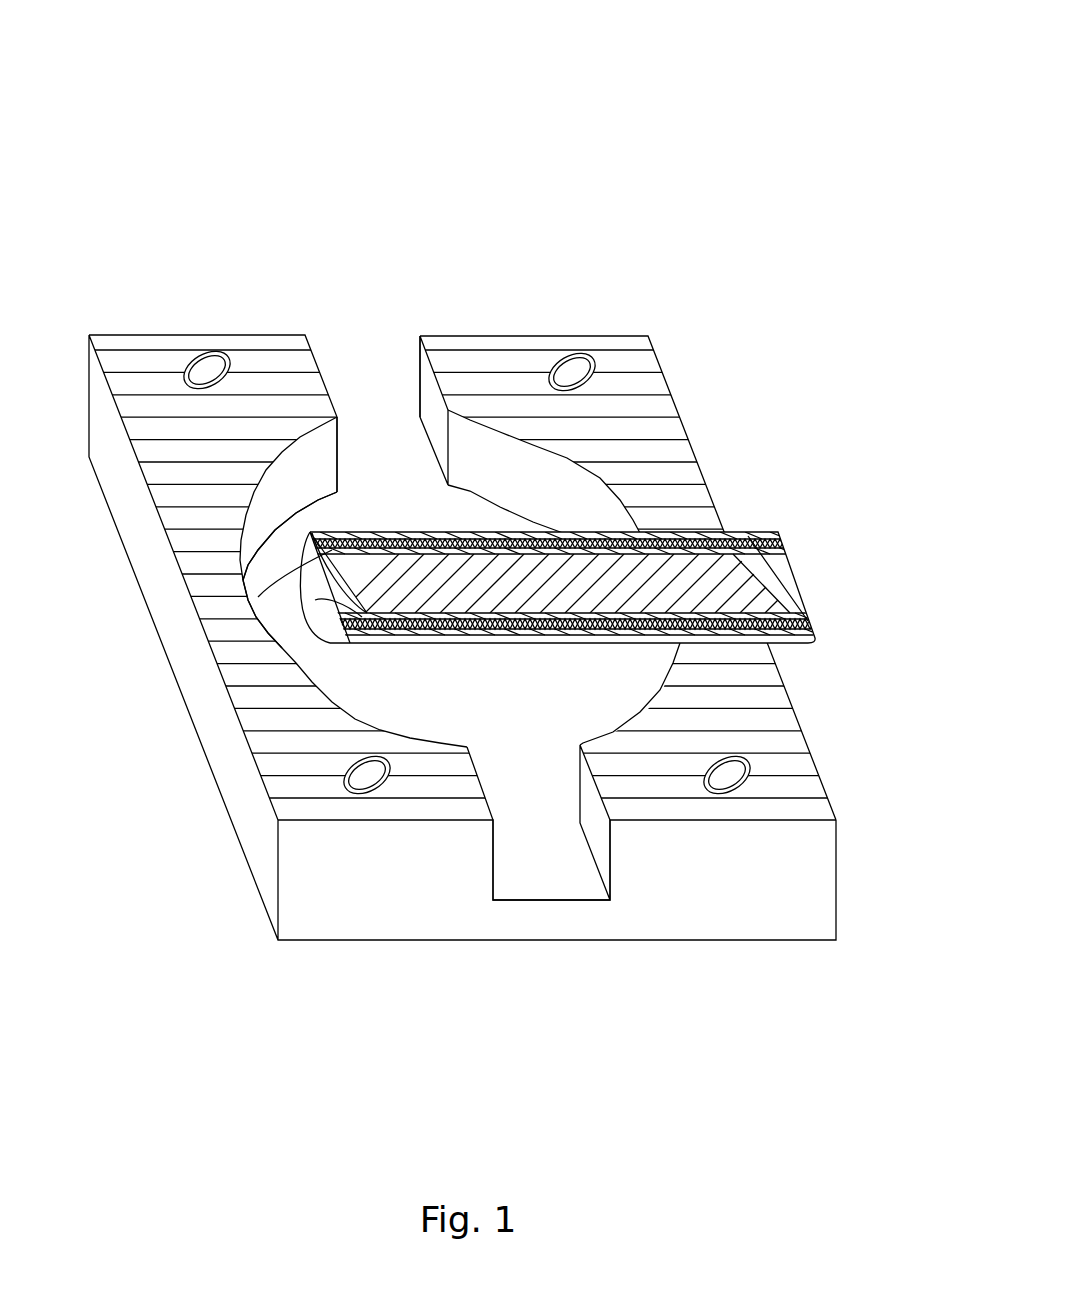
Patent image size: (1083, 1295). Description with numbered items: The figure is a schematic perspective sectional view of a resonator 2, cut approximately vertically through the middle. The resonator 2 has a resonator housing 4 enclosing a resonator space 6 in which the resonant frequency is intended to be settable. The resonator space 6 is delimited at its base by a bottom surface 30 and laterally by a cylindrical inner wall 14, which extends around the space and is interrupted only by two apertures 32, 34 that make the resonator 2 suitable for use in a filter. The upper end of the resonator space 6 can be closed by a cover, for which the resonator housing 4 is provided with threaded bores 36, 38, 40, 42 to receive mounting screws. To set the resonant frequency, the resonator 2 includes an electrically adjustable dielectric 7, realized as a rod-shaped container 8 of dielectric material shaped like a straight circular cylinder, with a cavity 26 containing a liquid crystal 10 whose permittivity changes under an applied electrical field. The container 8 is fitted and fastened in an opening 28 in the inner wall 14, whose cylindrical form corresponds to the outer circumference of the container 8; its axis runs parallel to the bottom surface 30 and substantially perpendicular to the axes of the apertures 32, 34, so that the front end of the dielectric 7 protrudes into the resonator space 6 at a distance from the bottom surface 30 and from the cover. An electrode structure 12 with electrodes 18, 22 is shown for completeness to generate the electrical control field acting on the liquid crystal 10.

The resonator 2 is at (465, 475).
The resonator housing 4 is at (633, 381).
The resonator space 6 is at (364, 467).
The electrically adjustable dielectric 7 is at (276, 596).
The container 8 is at (318, 604).
The liquid crystal 10 is at (248, 580).
The electrode structure 12 is at (832, 627).
The cylindrical inner wall 14 is at (500, 468).
The electrode 18 is at (750, 545).
The electrode 22 is at (797, 645).
The cavity 26 is at (618, 541).
The opening 28 is at (688, 545).
The bottom surface 30 is at (291, 527).
The aperture 32 is at (364, 350).
The aperture 34 is at (551, 862).
The threaded bore 36 is at (207, 372).
The threaded bore 38 is at (573, 372).
The threaded bore 40 is at (365, 774).
The threaded bore 42 is at (728, 774).